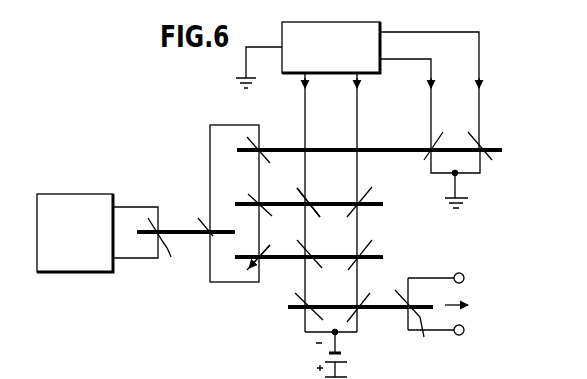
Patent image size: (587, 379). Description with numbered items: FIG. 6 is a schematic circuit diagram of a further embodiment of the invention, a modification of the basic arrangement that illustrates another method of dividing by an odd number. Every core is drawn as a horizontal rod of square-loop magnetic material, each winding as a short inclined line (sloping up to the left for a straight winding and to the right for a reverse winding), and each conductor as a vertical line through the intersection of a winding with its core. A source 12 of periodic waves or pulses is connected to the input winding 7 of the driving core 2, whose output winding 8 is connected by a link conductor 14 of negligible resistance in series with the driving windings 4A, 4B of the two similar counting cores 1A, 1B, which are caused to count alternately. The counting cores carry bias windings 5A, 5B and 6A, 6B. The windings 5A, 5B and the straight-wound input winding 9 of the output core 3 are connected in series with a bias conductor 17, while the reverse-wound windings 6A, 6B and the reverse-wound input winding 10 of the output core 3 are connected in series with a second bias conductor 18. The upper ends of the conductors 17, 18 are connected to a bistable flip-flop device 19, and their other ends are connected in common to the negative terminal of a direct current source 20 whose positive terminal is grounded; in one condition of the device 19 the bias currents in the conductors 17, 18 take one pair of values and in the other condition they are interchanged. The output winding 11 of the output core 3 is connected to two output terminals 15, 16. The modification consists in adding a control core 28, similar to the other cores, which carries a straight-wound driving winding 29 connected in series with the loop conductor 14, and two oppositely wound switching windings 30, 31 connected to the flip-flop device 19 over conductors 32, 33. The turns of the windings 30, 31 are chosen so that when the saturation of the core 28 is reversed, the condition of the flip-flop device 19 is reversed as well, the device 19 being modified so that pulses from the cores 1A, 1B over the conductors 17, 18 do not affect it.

The flip-flop device 19 is at (381, 32).
The conductor 33 is at (480, 55).
The conductor 32 is at (431, 65).
The control core 28 is at (372, 148).
The driving winding 29 is at (247, 137).
The link conductor 14 is at (210, 175).
The driving winding 4A is at (248, 195).
The counting core 1A is at (283, 200).
The bias winding 5A is at (306, 195).
The bias winding 6A is at (369, 190).
The bias conductor 17 is at (307, 224).
The second bias conductor 18 is at (358, 224).
The bias winding 6B is at (368, 246).
The driving winding 4B is at (254, 275).
The counting core 1B is at (287, 262).
The bias winding 5B is at (318, 265).
The input winding 10 is at (368, 298).
The input winding 9 is at (315, 313).
The output core 3 is at (397, 310).
The output winding 11 is at (417, 325).
The direct current source 20 is at (349, 353).
The output terminal 15 is at (465, 278).
The output terminal 16 is at (465, 330).
The switching winding 30 is at (427, 155).
The switching winding 31 is at (488, 156).
The driving core 2 is at (184, 228).
The input winding 7 is at (161, 248).
The output winding 8 is at (221, 239).
The source of periodic waves or pulses 12 is at (82, 273).